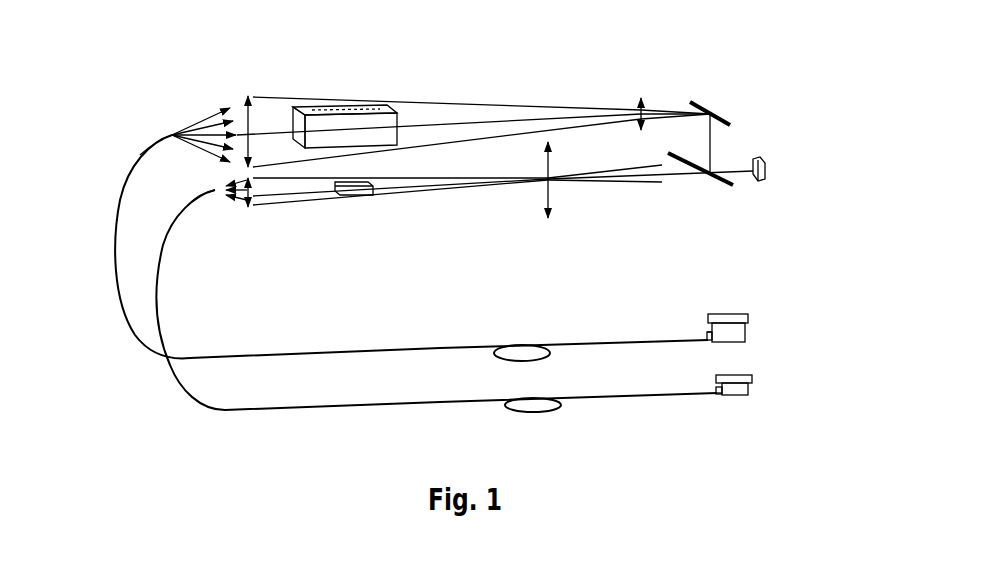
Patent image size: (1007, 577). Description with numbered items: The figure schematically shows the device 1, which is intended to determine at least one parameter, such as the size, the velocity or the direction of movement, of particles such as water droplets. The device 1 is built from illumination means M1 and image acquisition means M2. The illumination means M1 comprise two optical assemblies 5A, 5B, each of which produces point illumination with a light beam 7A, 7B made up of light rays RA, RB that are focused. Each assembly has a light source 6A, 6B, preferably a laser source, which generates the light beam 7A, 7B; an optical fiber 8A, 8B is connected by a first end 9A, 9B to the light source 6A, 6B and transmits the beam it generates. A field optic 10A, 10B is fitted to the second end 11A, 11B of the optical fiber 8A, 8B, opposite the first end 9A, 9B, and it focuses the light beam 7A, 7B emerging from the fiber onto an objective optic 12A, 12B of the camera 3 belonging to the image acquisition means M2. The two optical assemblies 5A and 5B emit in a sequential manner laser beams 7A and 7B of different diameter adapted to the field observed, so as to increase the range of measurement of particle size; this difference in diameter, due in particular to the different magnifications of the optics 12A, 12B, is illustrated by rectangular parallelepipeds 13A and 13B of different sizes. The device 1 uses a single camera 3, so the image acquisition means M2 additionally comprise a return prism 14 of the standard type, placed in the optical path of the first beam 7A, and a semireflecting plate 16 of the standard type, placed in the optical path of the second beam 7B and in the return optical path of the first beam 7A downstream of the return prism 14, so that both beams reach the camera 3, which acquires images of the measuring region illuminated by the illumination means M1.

The device 1 is at (614, 61).
The first optical assembly 5A is at (133, 147).
The second optical assembly 5B is at (174, 198).
The first optical fiber 8A is at (306, 352).
The second optical fiber 8B is at (322, 409).
The second end of first optical fiber 11A is at (152, 127).
The second end of second optical fiber 11B is at (209, 209).
The light rays of first beam RA is at (204, 120).
The light rays of second beam RB is at (222, 200).
The first field optic 10A is at (250, 118).
The second field optic 10B is at (250, 205).
The first light beam 7A is at (412, 99).
The second light beam 7B is at (407, 196).
The first rectangular parallelepiped 13A is at (385, 135).
The second rectangular parallelepiped 13B is at (350, 197).
The first objective optic 12A is at (648, 110).
The second objective optic 12B is at (553, 187).
The return prism 14 is at (716, 111).
The semireflecting plate 16 is at (720, 182).
The camera 3 is at (766, 170).
The image acquisition means M2 is at (777, 129).
The illumination means M1 is at (734, 308).
The first light source 6A is at (743, 333).
The second light source 6B is at (743, 388).
The first end of first optical fiber 9A is at (700, 332).
The first end of second optical fiber 9B is at (712, 399).